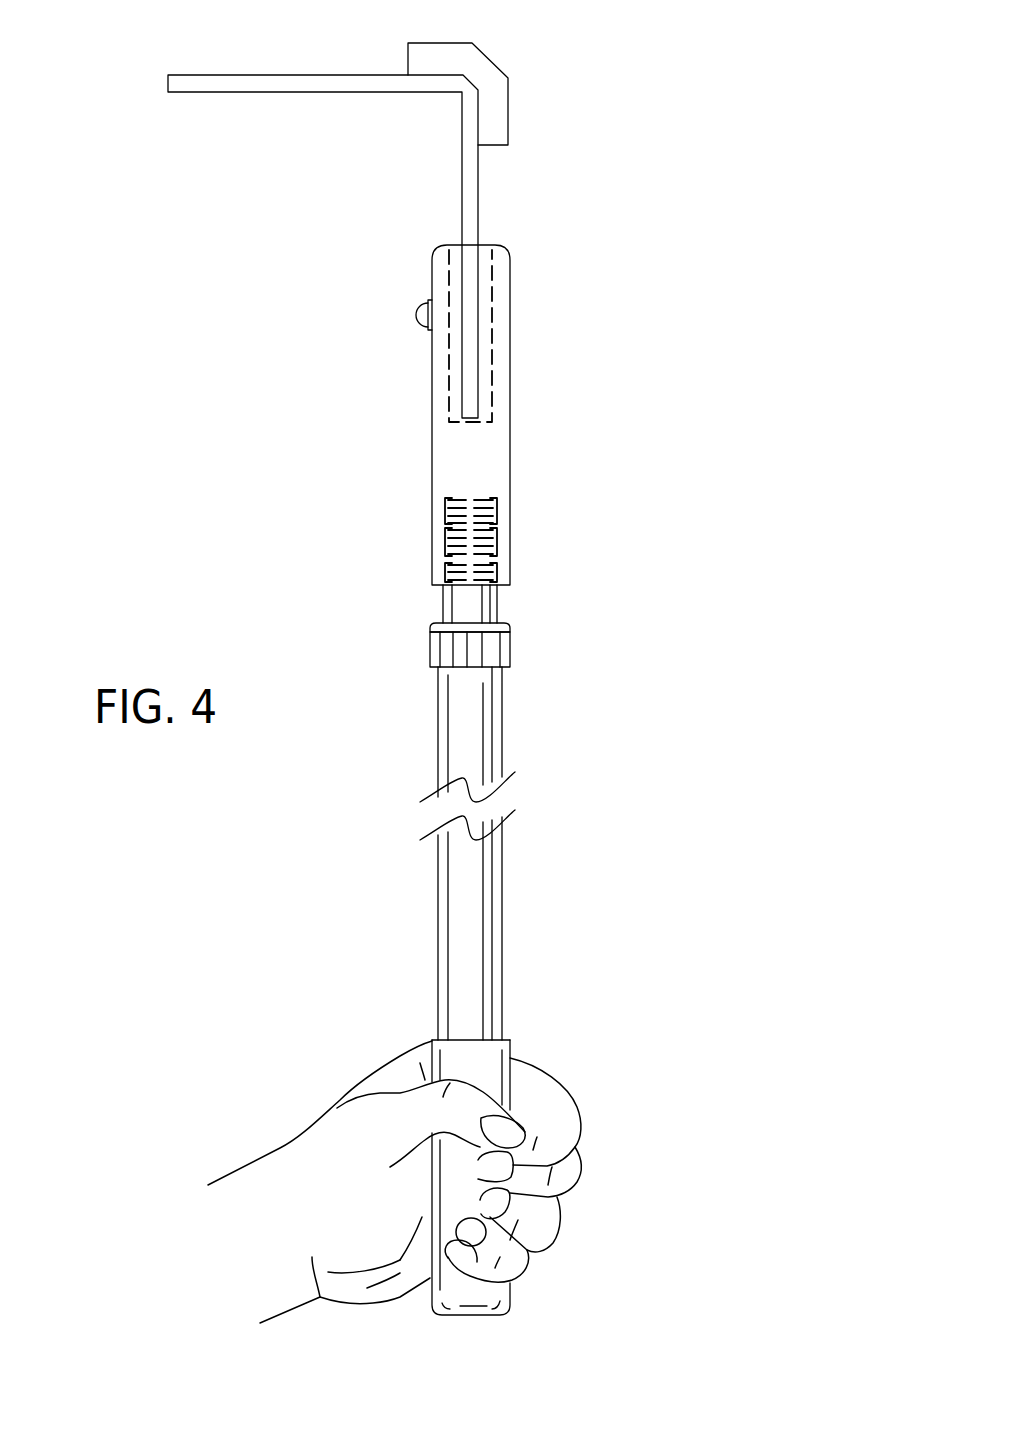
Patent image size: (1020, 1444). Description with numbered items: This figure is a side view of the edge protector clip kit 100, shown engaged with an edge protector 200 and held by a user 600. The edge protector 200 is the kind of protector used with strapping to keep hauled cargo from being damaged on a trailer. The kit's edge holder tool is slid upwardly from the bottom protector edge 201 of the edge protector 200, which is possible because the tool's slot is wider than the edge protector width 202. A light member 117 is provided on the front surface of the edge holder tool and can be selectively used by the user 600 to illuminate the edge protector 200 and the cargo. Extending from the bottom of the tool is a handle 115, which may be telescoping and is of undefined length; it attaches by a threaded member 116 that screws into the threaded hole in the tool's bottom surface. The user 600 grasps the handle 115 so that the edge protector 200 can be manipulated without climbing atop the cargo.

The edge protector clip kit 100 is at (652, 163).
The handle 115 is at (500, 915).
The threaded member 116 is at (490, 587).
The light member 117 is at (420, 315).
The edge protector 200 is at (472, 168).
The bottom protector edge 201 is at (468, 417).
The edge protector width 202 is at (478, 201).
The user 600 is at (280, 1150).